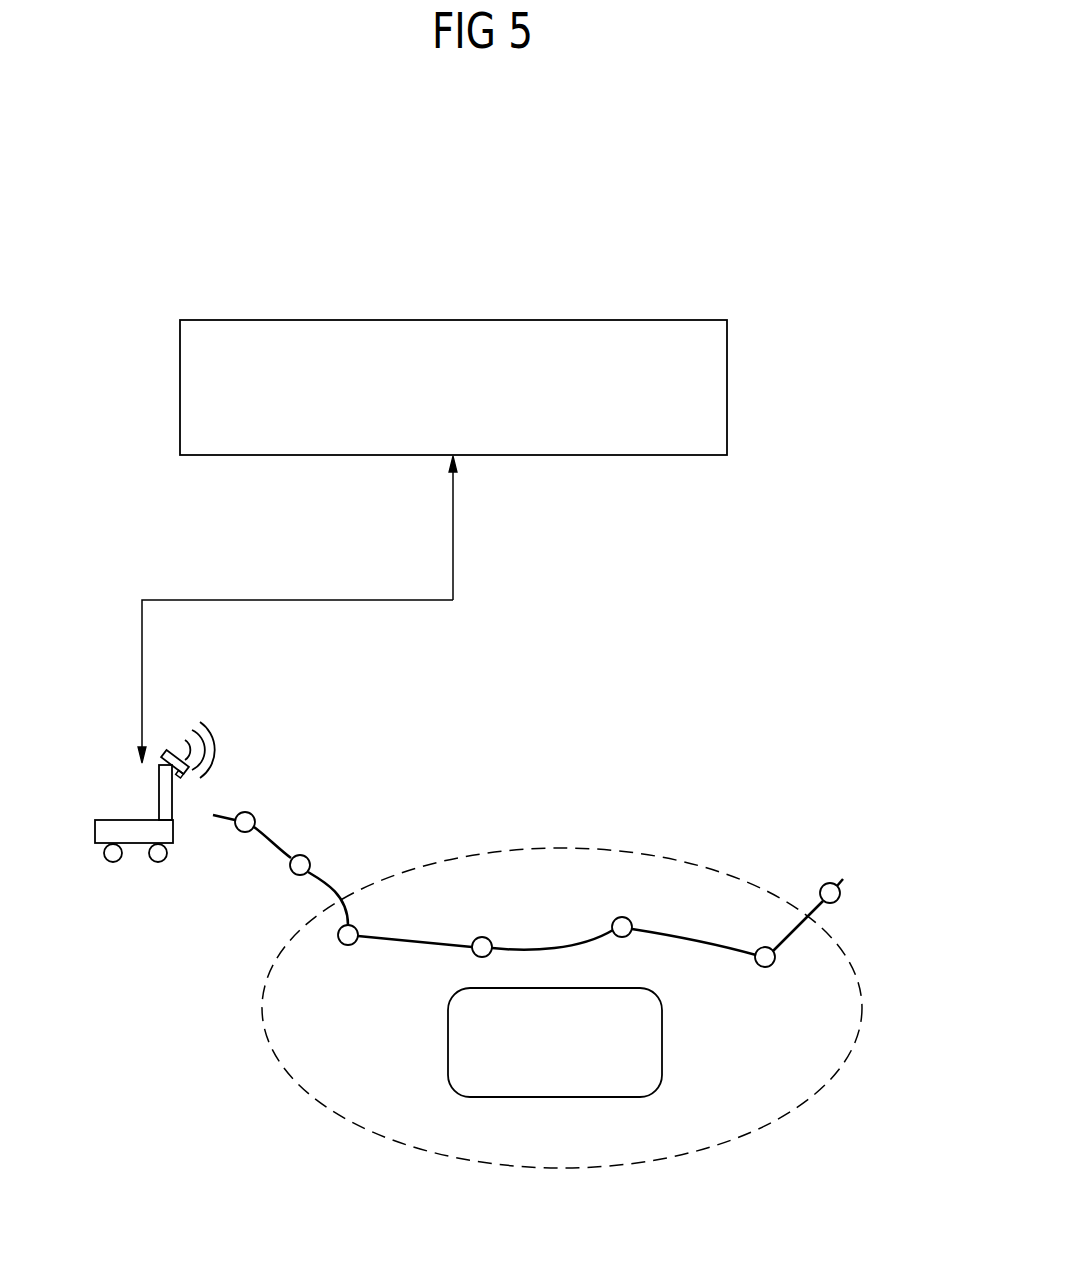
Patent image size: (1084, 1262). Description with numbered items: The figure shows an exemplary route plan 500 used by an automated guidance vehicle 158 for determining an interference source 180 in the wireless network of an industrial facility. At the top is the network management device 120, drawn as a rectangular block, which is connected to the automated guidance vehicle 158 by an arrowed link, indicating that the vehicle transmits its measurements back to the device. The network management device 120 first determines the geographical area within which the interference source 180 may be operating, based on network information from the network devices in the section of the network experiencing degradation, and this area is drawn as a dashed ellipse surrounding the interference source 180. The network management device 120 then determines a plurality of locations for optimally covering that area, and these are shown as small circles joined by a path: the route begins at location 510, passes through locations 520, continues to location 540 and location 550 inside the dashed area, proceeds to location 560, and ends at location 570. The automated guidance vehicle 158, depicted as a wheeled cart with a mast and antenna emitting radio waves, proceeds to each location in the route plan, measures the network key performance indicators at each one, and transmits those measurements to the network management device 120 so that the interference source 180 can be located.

The method / navigation scenario 500 is at (717, 190).
The network management device 120 is at (431, 406).
The automated guidance vehicle 158 is at (115, 818).
The location 510 is at (233, 831).
The location 520 is at (310, 858).
The location 540 is at (482, 937).
The location 550 is at (622, 917).
The location 560 is at (765, 967).
The location 570 is at (840, 897).
The interference source 180 is at (533, 1059).